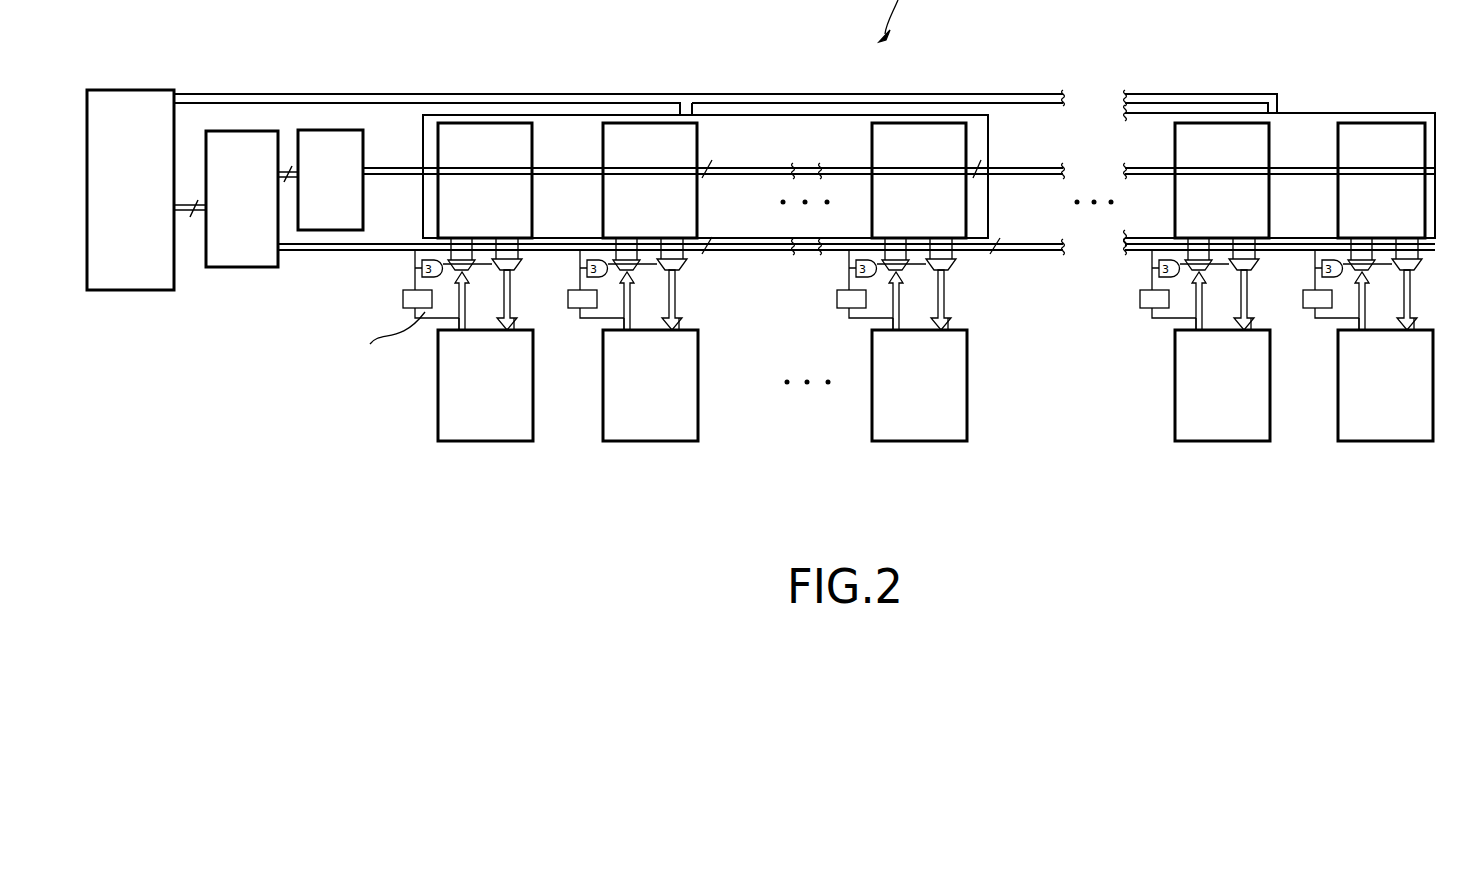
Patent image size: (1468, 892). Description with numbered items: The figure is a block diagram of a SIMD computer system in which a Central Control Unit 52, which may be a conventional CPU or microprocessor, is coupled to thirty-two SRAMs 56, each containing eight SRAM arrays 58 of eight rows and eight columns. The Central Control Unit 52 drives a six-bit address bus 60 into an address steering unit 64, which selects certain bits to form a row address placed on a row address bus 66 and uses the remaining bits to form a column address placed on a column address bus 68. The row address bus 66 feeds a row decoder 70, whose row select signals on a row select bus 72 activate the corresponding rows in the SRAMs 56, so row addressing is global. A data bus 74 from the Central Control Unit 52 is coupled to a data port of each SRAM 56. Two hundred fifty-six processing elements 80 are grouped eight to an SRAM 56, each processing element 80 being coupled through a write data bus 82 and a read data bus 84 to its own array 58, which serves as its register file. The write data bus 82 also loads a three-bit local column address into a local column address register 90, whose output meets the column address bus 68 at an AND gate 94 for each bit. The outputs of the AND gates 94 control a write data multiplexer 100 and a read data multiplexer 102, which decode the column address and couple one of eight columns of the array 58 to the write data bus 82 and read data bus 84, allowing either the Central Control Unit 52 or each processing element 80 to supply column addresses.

The Central Control Unit 52 is at (160, 88).
The SRAM 56 is at (568, 115).
The SRAM array 58 is at (533, 195).
The 6-bit address bus 60 is at (198, 213).
The address steering unit 64 is at (276, 268).
The row address bus 66 is at (289, 181).
The column address bus 68 is at (333, 252).
The row decoder 70 is at (364, 132).
The row select bus 72 is at (405, 178).
The data bus 74 is at (750, 94).
The processing element 80 is at (458, 427).
The write data bus 82 is at (471, 320).
The read data bus 84 is at (520, 318).
The local column address register 90 is at (420, 300).
The AND gate 94 is at (415, 263).
The write data multiplexer 100 is at (930, 301).
The read data multiplexer 102 is at (974, 300).